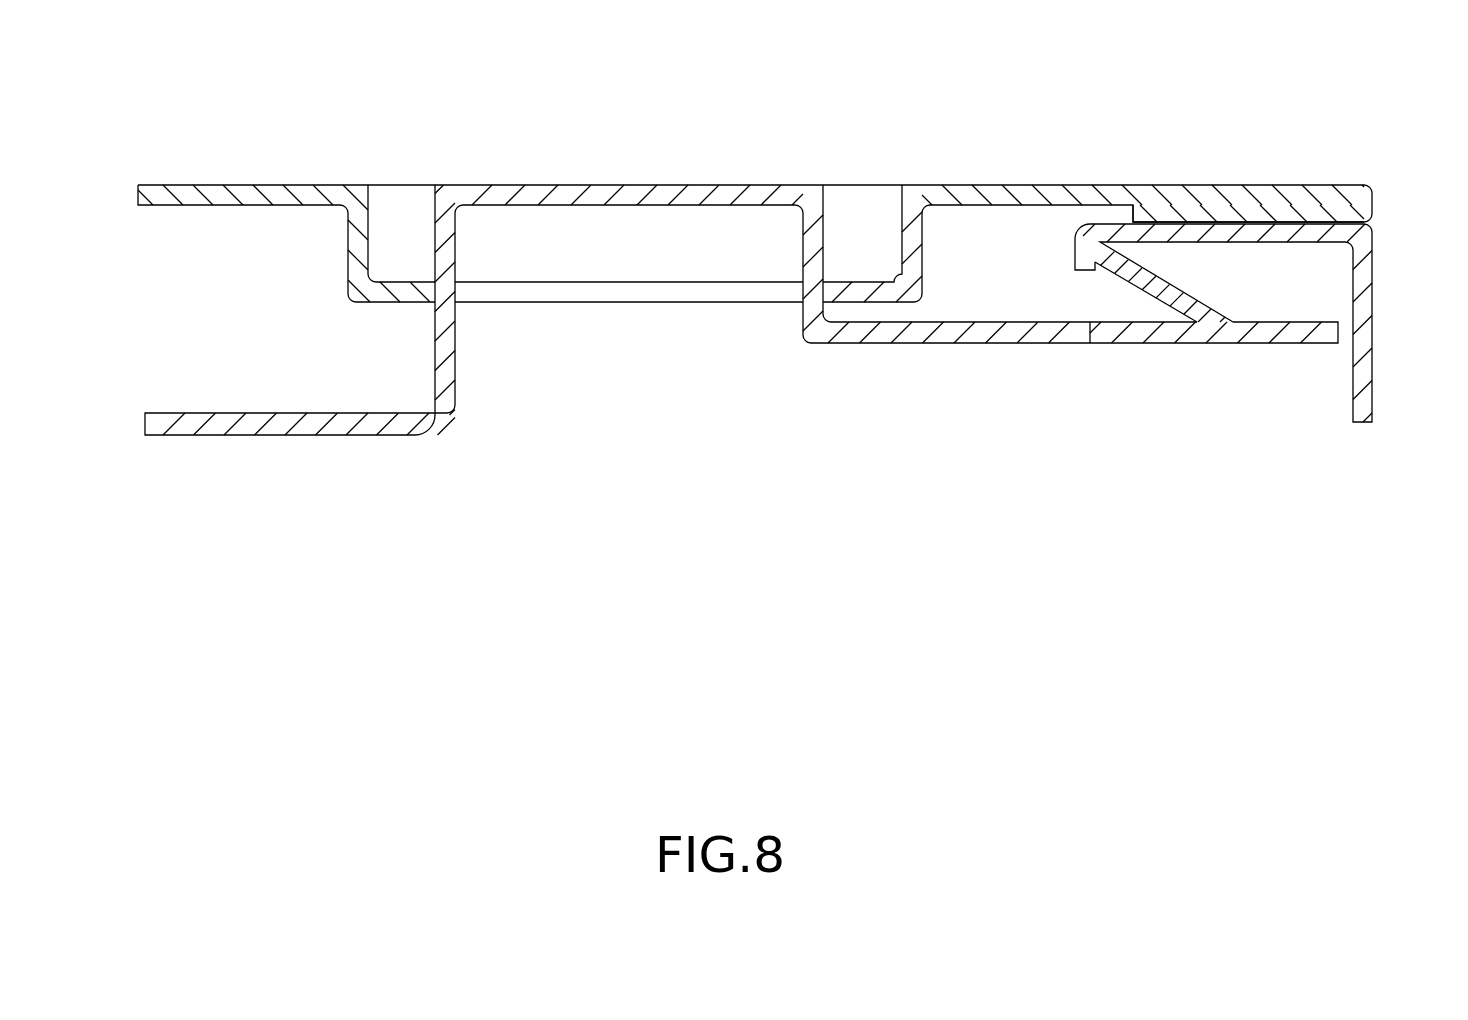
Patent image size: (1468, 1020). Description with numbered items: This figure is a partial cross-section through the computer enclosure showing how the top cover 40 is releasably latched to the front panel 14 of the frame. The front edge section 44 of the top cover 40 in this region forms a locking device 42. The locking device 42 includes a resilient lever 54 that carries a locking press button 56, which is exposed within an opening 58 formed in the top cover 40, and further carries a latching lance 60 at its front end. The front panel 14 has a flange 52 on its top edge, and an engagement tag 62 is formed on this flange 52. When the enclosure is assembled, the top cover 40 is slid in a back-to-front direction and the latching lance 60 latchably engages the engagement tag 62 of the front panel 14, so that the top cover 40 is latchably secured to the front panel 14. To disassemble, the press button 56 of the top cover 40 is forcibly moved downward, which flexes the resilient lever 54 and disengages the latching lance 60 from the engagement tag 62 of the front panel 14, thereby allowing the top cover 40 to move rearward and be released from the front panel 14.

The front panel 14 is at (1367, 347).
The top cover 40 is at (971, 193).
The locking device 42 is at (517, 193).
The front edge section 44 is at (1262, 193).
The flange 52 is at (1273, 233).
The resilient lever 54 is at (288, 430).
The locking press button 56 is at (712, 195).
The opening 58 is at (902, 253).
The latching lance 60 is at (1177, 303).
The engagement tag 62 is at (1080, 258).